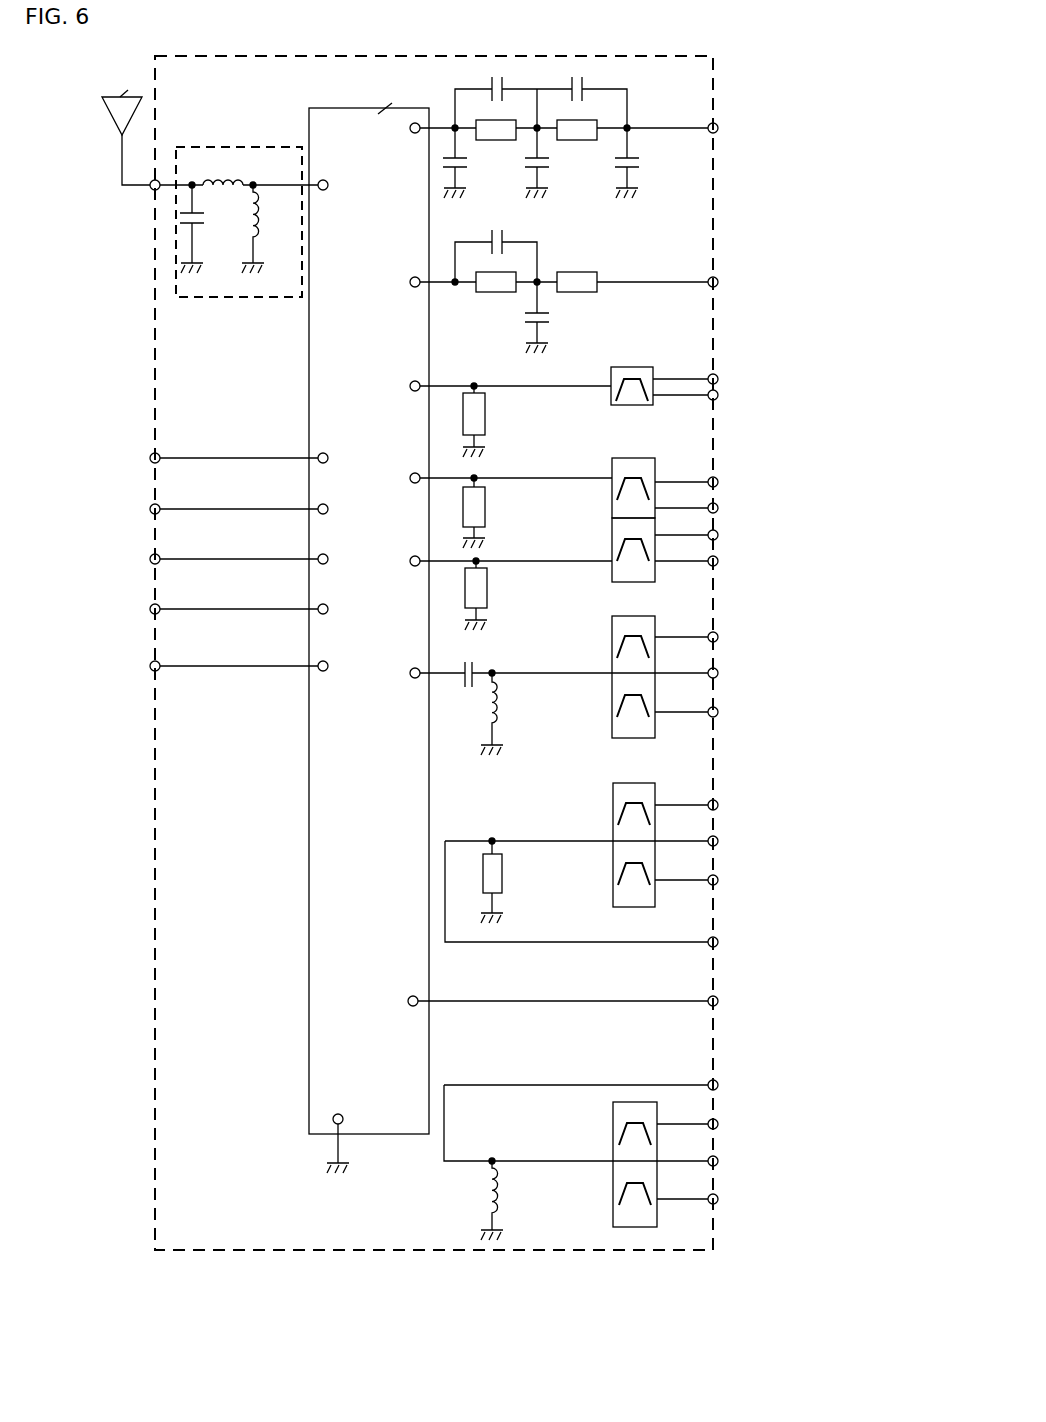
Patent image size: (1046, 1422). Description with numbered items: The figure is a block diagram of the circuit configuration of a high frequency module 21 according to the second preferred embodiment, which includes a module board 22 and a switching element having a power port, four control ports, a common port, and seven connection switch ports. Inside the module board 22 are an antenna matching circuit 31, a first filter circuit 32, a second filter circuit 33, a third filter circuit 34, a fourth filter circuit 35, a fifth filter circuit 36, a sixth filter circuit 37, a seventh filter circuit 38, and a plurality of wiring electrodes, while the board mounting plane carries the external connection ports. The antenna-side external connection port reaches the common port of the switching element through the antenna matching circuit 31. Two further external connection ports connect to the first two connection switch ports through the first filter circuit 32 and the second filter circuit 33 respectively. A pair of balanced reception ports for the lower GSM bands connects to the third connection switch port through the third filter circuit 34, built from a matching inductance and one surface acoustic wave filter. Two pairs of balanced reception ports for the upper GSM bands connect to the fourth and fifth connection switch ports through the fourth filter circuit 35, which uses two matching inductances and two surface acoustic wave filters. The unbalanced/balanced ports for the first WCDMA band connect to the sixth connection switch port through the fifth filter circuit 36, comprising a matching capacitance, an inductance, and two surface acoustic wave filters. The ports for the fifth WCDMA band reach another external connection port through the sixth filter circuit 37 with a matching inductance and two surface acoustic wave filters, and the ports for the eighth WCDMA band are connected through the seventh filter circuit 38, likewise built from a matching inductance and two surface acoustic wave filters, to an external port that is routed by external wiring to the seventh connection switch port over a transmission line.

The high frequency module 21 is at (818, 94).
The module board 22 is at (724, 53).
The antenna matching circuit 31 is at (256, 143).
The first filter circuit 32 is at (608, 127).
The second filter circuit 33 is at (612, 282).
The third filter circuit 34 is at (609, 400).
The fourth filter circuit 35 is at (614, 527).
The fifth filter circuit 36 is at (618, 671).
The sixth filter circuit 37 is at (653, 853).
The seventh filter circuit 38 is at (651, 1142).